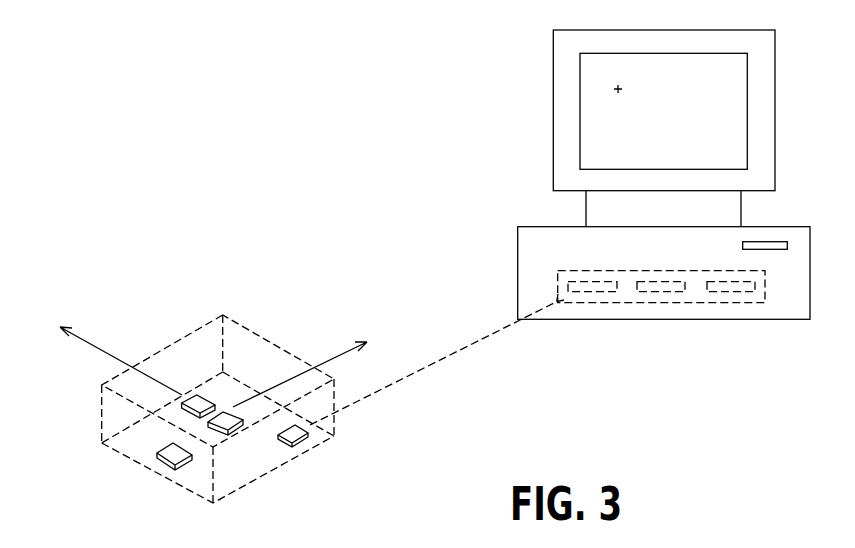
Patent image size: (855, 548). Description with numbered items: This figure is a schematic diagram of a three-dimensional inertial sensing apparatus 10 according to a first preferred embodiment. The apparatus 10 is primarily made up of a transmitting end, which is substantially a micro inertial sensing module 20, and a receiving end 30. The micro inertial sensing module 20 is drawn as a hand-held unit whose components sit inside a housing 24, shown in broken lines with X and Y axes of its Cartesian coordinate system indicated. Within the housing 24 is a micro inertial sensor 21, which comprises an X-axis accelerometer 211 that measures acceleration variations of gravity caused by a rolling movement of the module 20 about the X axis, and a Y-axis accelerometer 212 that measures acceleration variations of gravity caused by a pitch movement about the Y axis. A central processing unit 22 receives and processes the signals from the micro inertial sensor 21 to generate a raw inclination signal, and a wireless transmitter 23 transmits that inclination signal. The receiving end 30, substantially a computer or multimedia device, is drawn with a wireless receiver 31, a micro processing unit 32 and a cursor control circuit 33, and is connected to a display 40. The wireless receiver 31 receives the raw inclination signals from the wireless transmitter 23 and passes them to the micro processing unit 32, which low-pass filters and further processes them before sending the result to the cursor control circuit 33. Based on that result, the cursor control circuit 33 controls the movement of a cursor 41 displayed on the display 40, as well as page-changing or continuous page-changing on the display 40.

The three-dimensional inertial sensing apparatus 10 is at (230, 68).
The micro inertial sensing module 20 is at (122, 285).
The micro inertial sensor 21 is at (282, 284).
The X-axis accelerometer 211 is at (202, 397).
The Y-axis accelerometer 212 is at (227, 409).
The central processing unit 22 is at (163, 457).
The wireless transmitter 23 is at (302, 442).
The housing 24 is at (100, 418).
The receiving end 30 is at (547, 280).
The wireless receiver 31 is at (592, 290).
The micro processing unit 32 is at (660, 290).
The cursor control circuit 33 is at (730, 290).
The display 40 is at (553, 55).
The cursor 41 is at (616, 90).